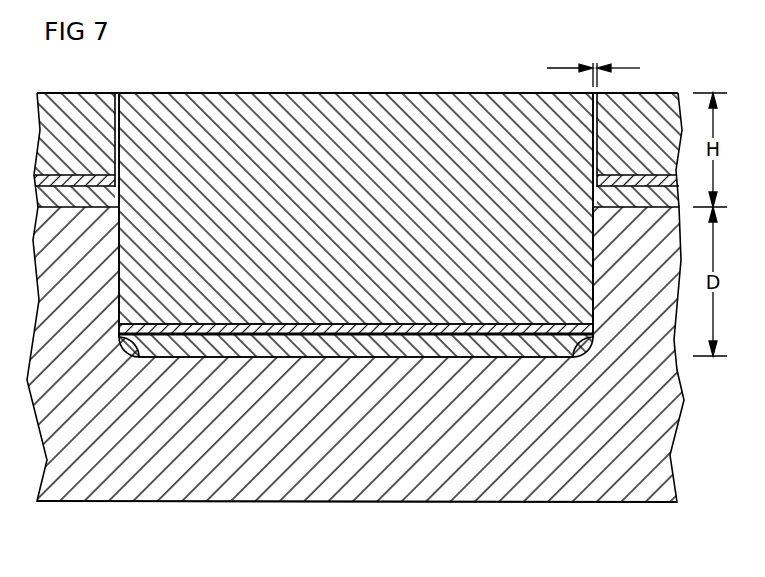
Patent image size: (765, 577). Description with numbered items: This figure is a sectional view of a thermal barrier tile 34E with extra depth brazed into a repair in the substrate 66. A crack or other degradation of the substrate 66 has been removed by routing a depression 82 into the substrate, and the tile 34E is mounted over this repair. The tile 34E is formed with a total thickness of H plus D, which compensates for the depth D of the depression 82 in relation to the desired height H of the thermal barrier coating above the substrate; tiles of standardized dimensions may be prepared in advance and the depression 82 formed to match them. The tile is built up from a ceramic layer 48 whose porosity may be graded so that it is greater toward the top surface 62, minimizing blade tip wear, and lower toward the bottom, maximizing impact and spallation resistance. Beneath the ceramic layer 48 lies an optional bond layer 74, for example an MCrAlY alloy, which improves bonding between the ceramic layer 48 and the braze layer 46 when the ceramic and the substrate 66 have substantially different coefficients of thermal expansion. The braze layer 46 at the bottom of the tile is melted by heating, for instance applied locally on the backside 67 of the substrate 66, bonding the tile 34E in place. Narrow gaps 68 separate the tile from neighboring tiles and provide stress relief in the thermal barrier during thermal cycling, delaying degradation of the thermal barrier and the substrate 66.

The tile 34E is at (382, 63).
The top surface 62 is at (190, 93).
The ceramic layer 48 is at (224, 107).
The gaps 68 is at (573, 62).
The depression 82 is at (593, 258).
The braze layer 46 is at (300, 345).
The bond layer 74 is at (370, 327).
The substrate 66 is at (117, 468).
The backside 67 is at (177, 501).